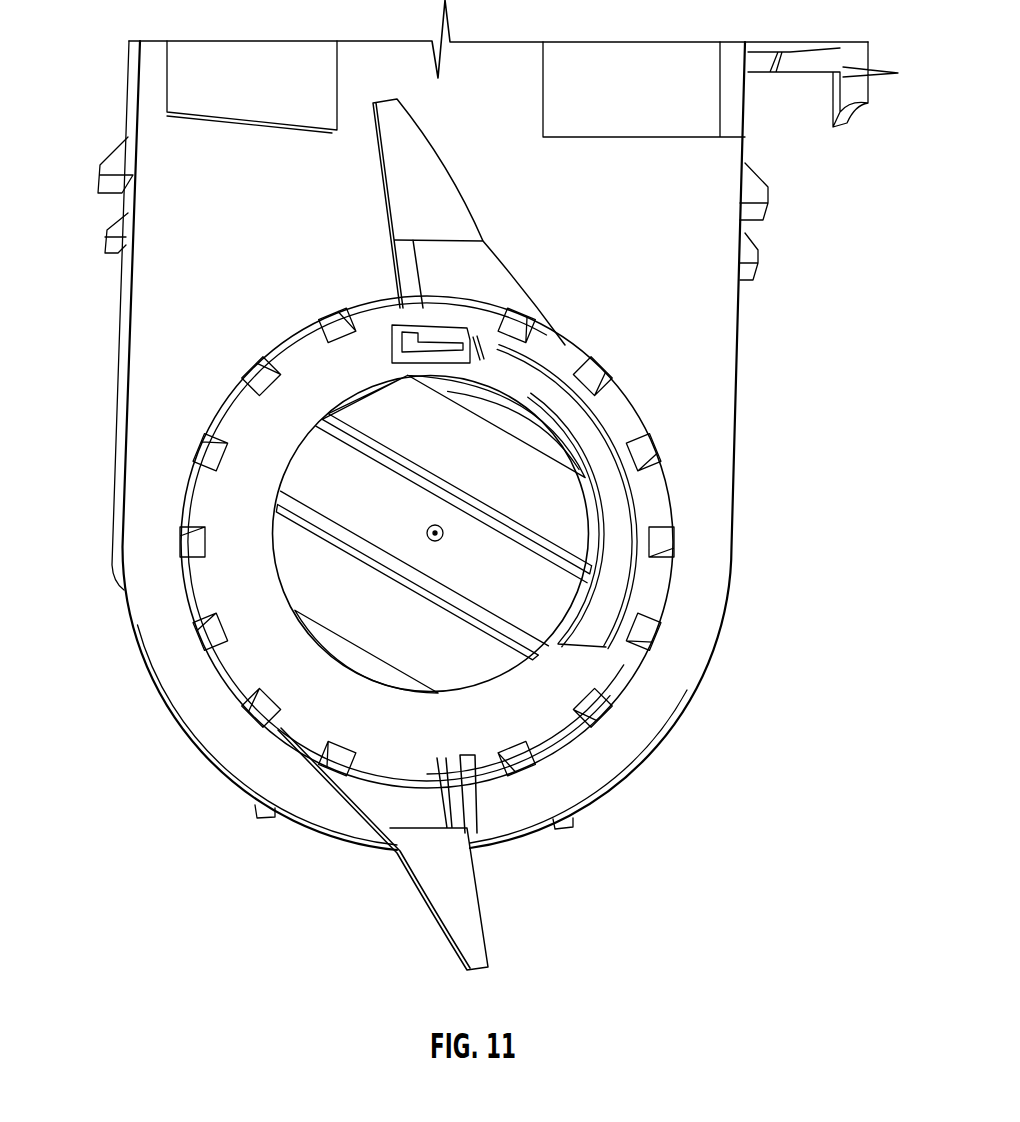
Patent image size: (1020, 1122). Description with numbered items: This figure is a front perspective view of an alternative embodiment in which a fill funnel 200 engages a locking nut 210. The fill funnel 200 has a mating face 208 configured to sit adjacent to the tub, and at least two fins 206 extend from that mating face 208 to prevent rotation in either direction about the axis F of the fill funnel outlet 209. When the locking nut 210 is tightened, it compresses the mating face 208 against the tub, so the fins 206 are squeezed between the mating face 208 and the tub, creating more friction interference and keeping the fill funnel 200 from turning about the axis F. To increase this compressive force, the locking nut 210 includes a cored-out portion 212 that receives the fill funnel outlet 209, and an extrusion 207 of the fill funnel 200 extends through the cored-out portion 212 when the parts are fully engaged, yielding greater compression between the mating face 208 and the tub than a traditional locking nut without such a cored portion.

The fill funnel 200 is at (507, 122).
The fins 206 is at (282, 92).
The extrusion 207 is at (458, 335).
The mating face 208 is at (176, 165).
The fill funnel outlet 209 is at (382, 597).
The locking nut 210 is at (343, 366).
The cored-out portion 212 is at (586, 404).
The axis F is at (443, 541).